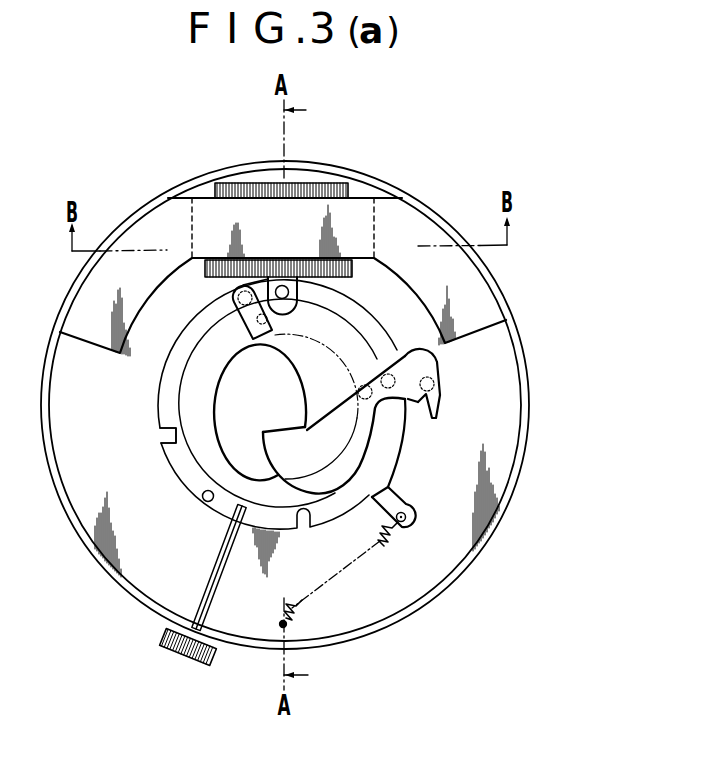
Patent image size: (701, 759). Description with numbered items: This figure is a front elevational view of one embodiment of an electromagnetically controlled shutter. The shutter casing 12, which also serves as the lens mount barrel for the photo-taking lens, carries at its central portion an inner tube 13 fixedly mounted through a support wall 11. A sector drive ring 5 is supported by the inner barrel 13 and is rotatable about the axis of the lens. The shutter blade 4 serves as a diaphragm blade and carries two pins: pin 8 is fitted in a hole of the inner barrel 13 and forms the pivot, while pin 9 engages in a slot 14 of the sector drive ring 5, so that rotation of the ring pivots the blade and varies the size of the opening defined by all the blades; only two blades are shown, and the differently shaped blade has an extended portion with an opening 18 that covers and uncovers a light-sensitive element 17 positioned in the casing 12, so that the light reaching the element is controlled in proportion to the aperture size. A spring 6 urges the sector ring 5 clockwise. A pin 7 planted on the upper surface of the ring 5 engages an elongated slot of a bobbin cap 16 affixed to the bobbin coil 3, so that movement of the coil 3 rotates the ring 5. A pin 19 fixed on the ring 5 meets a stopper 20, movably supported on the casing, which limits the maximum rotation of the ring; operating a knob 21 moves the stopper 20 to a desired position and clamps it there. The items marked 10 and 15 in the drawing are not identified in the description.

The bobbin coil 3 is at (320, 184).
The shutter blade 4 is at (308, 363).
The sector drive ring 5 is at (178, 460).
The spring 6 is at (386, 537).
The pin 7 is at (289, 293).
The pin 8 is at (258, 333).
The pin 9 is at (239, 312).
The rotor 10 is at (247, 427).
The support wall 11 is at (452, 553).
The shutter casing 12 is at (520, 400).
The inner tube 13 is at (203, 382).
The slot 14 is at (160, 433).
The stator core 15 is at (308, 280).
The bobbin cap 16 is at (284, 311).
The light-sensitive element 17 is at (428, 384).
The opening 18 is at (413, 408).
The pin 19 is at (202, 497).
The stopper 20 is at (215, 564).
The knob 21 is at (158, 645).